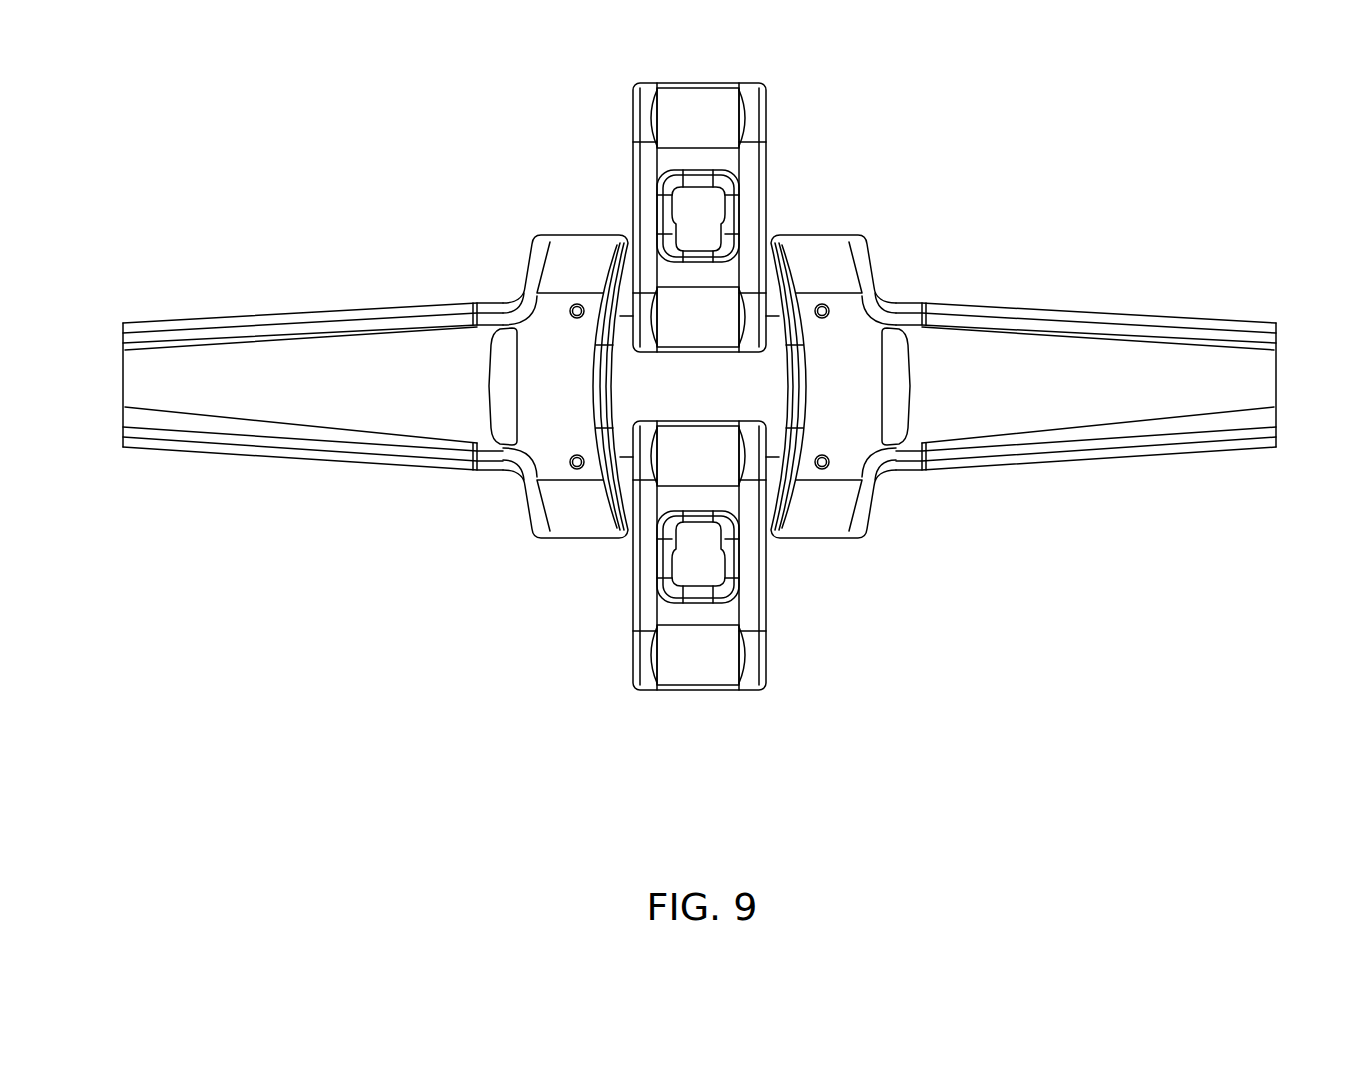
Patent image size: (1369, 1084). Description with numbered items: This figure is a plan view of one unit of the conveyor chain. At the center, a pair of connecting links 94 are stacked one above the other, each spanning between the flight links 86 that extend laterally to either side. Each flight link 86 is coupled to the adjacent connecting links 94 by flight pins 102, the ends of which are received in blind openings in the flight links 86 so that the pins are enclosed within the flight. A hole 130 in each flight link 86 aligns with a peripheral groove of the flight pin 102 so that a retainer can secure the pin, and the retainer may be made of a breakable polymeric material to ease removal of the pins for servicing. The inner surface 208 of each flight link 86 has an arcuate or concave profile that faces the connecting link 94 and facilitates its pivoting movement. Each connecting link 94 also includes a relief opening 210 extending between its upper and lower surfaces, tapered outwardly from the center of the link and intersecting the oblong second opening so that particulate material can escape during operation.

The flight link 86 is at (319, 311).
The connecting link 94 is at (648, 395).
The flight pin 102 is at (732, 389).
The hole 130 is at (824, 304).
The inner surface 208 is at (606, 375).
The relief opening 210 is at (676, 220).